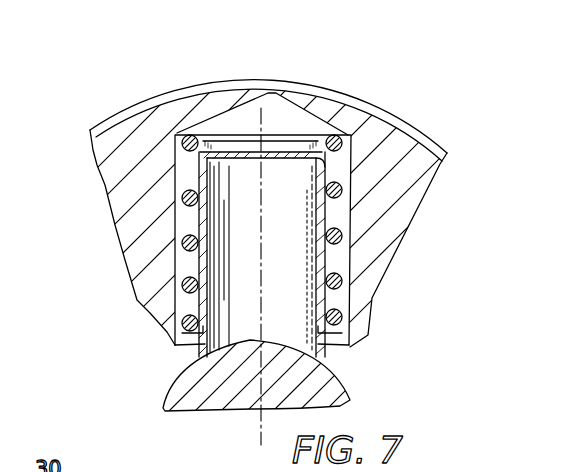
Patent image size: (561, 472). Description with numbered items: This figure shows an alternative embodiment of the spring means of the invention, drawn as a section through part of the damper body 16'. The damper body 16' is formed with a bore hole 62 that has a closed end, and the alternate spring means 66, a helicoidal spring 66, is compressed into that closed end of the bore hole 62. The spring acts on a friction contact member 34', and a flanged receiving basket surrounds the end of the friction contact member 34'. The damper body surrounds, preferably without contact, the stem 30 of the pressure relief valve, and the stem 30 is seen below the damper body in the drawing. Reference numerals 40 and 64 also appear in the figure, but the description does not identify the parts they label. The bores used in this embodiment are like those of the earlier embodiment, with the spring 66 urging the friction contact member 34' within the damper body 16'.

The damper body 16' is at (280, 236).
The bushing retainer block 40 is at (175, 185).
The bore hole 62 is at (287, 123).
The friction contact member 34' is at (360, 250).
The liner sleeve 64 is at (323, 268).
The helicoidal spring 66 is at (341, 290).
The stem 30 is at (313, 382).